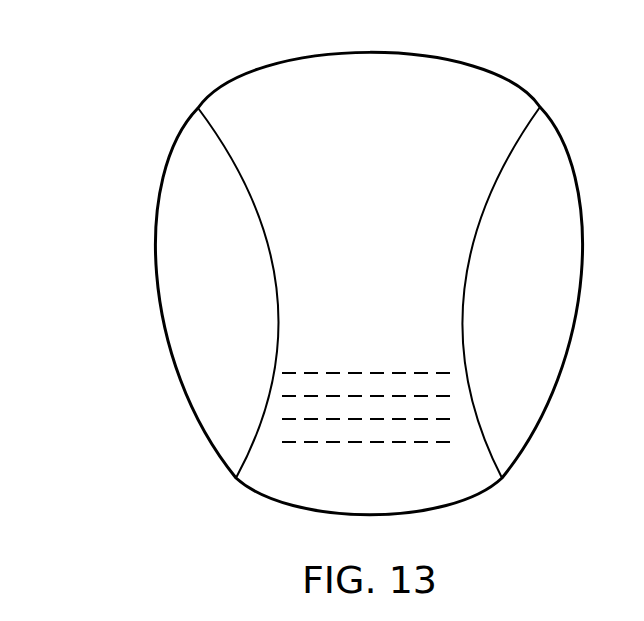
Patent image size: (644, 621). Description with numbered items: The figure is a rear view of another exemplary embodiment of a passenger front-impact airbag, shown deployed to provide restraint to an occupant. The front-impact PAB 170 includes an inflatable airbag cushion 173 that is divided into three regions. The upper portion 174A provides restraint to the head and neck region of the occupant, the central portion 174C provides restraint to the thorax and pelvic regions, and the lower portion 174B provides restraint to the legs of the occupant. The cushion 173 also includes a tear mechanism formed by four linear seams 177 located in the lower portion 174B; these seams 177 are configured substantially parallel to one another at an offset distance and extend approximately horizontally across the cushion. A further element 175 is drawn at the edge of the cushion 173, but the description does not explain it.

The front-impact PAB 170 is at (160, 72).
The inflatable airbag cushion 173 is at (217, 200).
The upper portion 174A is at (366, 133).
The lower portion 174B is at (298, 465).
The central portion 174C is at (367, 256).
The peripheral edge seam 175 is at (178, 387).
The linear seams 177 is at (343, 372).